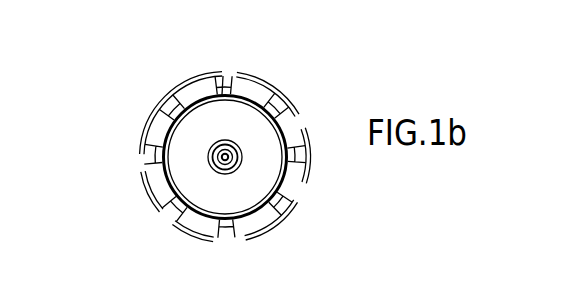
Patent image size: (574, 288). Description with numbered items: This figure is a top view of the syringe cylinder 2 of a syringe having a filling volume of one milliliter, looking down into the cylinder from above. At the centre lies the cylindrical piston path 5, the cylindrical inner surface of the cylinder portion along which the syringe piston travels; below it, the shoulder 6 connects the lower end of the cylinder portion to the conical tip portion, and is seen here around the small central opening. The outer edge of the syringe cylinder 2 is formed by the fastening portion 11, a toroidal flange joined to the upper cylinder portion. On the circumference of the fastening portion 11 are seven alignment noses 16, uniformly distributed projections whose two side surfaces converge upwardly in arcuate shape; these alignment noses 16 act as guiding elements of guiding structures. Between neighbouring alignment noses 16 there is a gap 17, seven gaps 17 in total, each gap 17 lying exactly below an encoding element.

The syringe cylinder 2 is at (204, 121).
The cylindrical piston path 5 is at (212, 143).
The shoulder 6 is at (237, 168).
The fastening portion 11 is at (287, 132).
The alignment nose 16 is at (198, 77).
The gap 17 is at (240, 92).